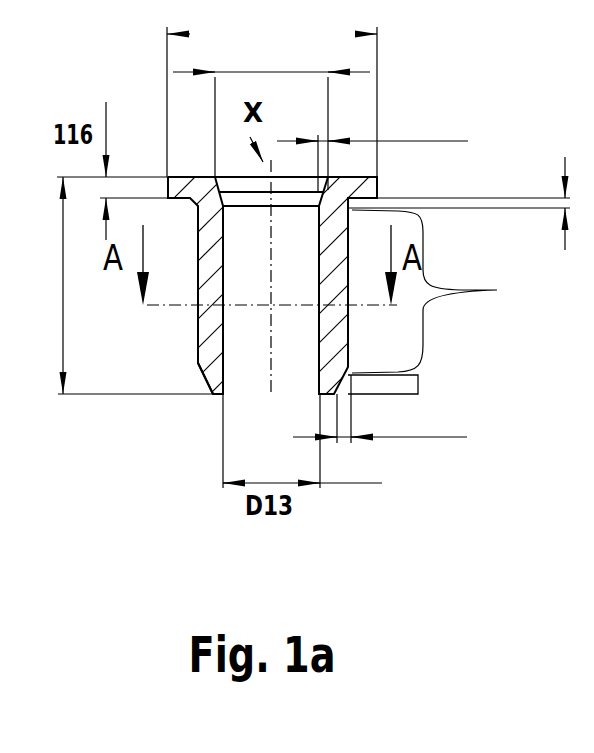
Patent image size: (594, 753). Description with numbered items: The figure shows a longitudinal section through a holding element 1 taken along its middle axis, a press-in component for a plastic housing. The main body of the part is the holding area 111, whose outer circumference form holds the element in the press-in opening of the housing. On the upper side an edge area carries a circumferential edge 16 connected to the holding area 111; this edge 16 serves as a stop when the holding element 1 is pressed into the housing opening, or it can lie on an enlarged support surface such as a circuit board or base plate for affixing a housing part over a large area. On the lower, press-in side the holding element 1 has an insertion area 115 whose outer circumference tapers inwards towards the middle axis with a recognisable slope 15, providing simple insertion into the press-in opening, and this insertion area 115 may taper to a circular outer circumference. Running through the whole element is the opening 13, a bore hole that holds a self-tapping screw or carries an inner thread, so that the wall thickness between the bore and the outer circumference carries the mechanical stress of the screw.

The holding element 1 is at (303, 263).
The circumferential edge 16 is at (382, 187).
The holding area 111 is at (470, 290).
The insertion area 115 is at (418, 384).
The slope 15 is at (203, 382).
The opening 13 is at (309, 354).